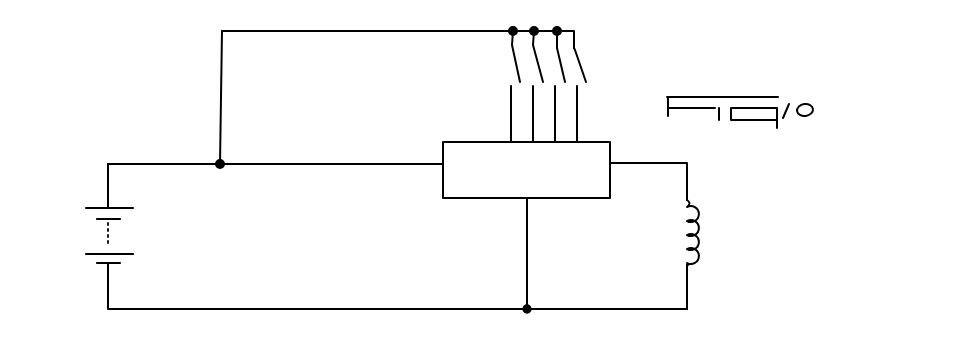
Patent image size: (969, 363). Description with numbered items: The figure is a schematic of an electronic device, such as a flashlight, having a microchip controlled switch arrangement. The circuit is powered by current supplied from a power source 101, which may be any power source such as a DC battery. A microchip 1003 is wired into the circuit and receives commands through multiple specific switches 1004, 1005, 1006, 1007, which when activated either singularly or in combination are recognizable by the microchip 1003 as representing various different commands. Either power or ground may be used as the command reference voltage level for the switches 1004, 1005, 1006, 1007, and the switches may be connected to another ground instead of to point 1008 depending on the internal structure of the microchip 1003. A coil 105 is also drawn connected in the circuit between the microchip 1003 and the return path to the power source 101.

The power source 101 is at (98, 239).
The coil / inductor 105 is at (710, 241).
The microchip 1003 is at (570, 198).
The switch 1004 is at (589, 75).
The switch 1005 is at (569, 69).
The switch 1006 is at (547, 60).
The switch 1007 is at (506, 64).
The point 1008 is at (532, 322).